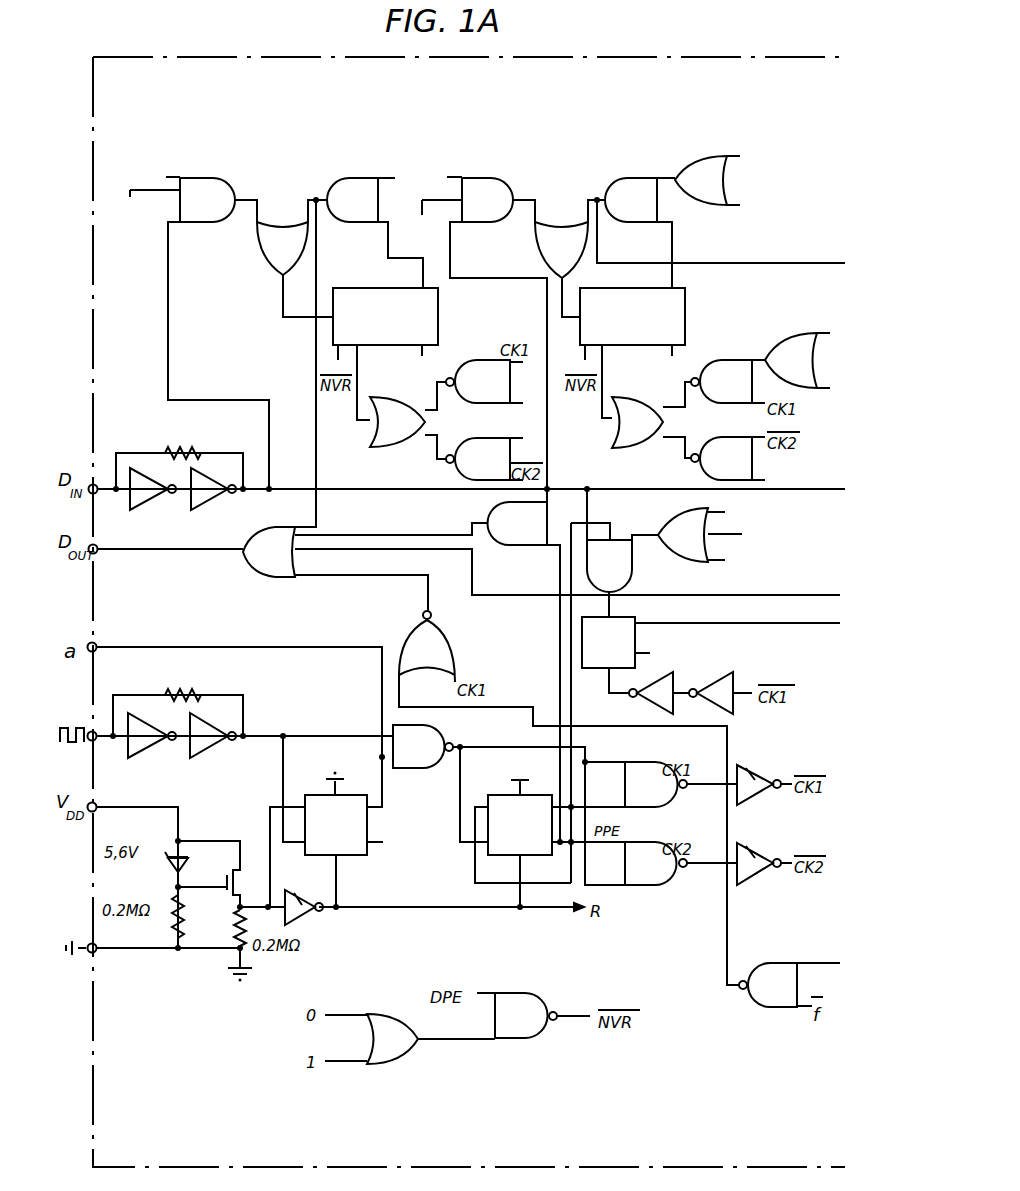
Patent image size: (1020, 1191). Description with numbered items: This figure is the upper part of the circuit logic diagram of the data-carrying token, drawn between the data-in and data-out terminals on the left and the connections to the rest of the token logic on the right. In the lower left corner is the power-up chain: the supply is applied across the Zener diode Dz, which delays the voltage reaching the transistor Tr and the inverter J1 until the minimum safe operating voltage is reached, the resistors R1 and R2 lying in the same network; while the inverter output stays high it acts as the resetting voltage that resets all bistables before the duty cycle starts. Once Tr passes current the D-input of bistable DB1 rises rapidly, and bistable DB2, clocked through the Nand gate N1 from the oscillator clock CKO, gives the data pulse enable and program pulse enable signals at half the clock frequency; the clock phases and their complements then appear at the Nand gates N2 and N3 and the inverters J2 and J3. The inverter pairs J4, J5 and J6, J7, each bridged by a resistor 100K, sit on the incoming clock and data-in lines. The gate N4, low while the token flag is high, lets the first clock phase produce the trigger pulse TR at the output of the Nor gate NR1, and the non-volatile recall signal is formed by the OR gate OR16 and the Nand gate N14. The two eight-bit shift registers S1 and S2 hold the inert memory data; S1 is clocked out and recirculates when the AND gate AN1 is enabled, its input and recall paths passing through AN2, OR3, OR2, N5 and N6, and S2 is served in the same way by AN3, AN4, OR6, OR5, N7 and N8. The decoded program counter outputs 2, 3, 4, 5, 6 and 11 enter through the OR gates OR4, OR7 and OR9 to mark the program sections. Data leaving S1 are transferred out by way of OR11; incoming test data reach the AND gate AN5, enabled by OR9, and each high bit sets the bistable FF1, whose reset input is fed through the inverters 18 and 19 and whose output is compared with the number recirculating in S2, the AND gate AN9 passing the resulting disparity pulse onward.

The AND gate AN1 is at (352, 200).
The AND gate AN2 is at (207, 200).
The AND gate AN3 is at (631, 200).
The AND gate AN4 is at (487, 200).
The AND gate AN5 is at (609, 566).
The AND gate AN9 is at (517, 523).
The OR gate OR2 is at (397, 422).
The OR gate OR3 is at (282, 248).
The OR gate OR4 is at (701, 180).
The OR gate OR5 is at (637, 422).
The OR gate OR6 is at (561, 250).
The OR gate OR7 is at (791, 360).
The OR gate OR9 is at (683, 535).
The OR gate OR11 is at (269, 552).
The OR gate OR16 is at (392, 1039).
The NAND gate N1 is at (423, 746).
The NAND gate N2 is at (623, 784).
The NAND gate N3 is at (656, 863).
The gate N4 is at (768, 985).
The NAND gate N5 is at (478, 381).
The NAND gate N6 is at (478, 459).
The NAND gate N7 is at (721, 381).
The NAND gate N8 is at (721, 458).
The NAND gate N14 is at (526, 1015).
The NOR gate NR1 is at (427, 646).
The 8-bit shift register S1 is at (385, 318).
The 8-bit shift register S2 is at (632, 321).
The bistable FF1 is at (625, 633).
The bistable DB1 is at (329, 815).
The bistable DB2 is at (508, 815).
The inverter J1 is at (304, 897).
The inverter J2 is at (759, 776).
The inverter J3 is at (759, 855).
The inverter J4 is at (152, 750).
The inverter J5 is at (213, 745).
The inverter J6 is at (153, 500).
The inverter J7 is at (213, 497).
The inverter 18 is at (651, 693).
The inverter 19 is at (711, 693).
The Zener diode Dz is at (189, 864).
The transistor Tr is at (244, 882).
The resistor R1 is at (191, 916).
The resistor R2 is at (229, 928).
The resistor 100K is at (179, 564).
The trigger pulse TR is at (445, 601).
The oscillator clock output CKO is at (474, 732).
The decoded program counter output 2 is at (457, 291).
The decoded program counter output 3 is at (775, 336).
The decoded program counter output 4 is at (773, 386).
The decoded program counter output 5 is at (343, 306).
The decoded program counter output 6 is at (606, 330).
The decoded program counter output 11 is at (736, 535).